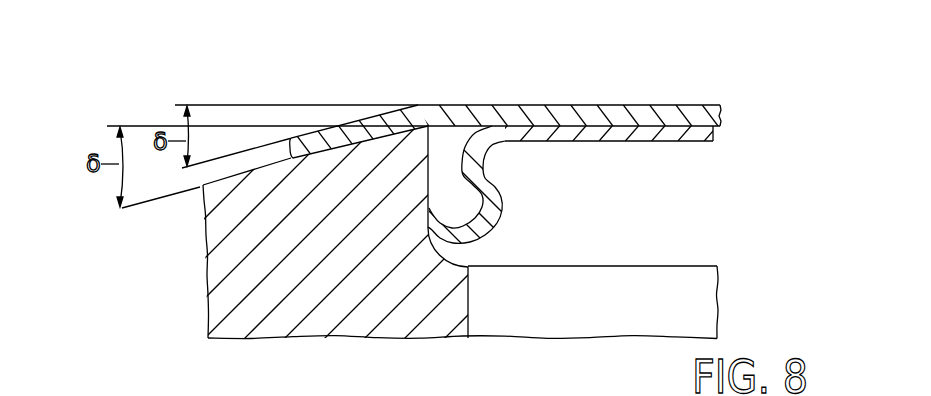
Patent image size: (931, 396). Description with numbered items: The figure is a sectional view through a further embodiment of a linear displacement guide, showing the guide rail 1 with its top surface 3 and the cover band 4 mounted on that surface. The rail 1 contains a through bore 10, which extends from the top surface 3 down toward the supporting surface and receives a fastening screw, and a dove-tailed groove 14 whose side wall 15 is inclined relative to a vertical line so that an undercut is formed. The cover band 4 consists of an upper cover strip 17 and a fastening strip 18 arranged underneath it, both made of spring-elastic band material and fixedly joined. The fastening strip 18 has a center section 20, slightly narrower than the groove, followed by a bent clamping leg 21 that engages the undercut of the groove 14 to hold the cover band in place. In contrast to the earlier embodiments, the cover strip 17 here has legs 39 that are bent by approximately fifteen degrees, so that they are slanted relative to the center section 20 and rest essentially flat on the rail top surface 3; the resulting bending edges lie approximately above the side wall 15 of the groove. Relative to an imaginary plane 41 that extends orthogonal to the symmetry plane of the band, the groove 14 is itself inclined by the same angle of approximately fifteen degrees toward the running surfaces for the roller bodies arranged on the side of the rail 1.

The guide rail 1 is at (198, 277).
The top surface 3 is at (268, 165).
The cover band 4 is at (729, 118).
The through bore 10 is at (560, 313).
The groove 14 is at (674, 230).
The side wall 15 is at (430, 160).
The cover strip 17 is at (603, 100).
The fastening strip 18 is at (634, 145).
The center section 20 is at (698, 145).
The clamping leg 21 is at (507, 193).
The leg 39 is at (380, 121).
The plane 41 is at (143, 125).